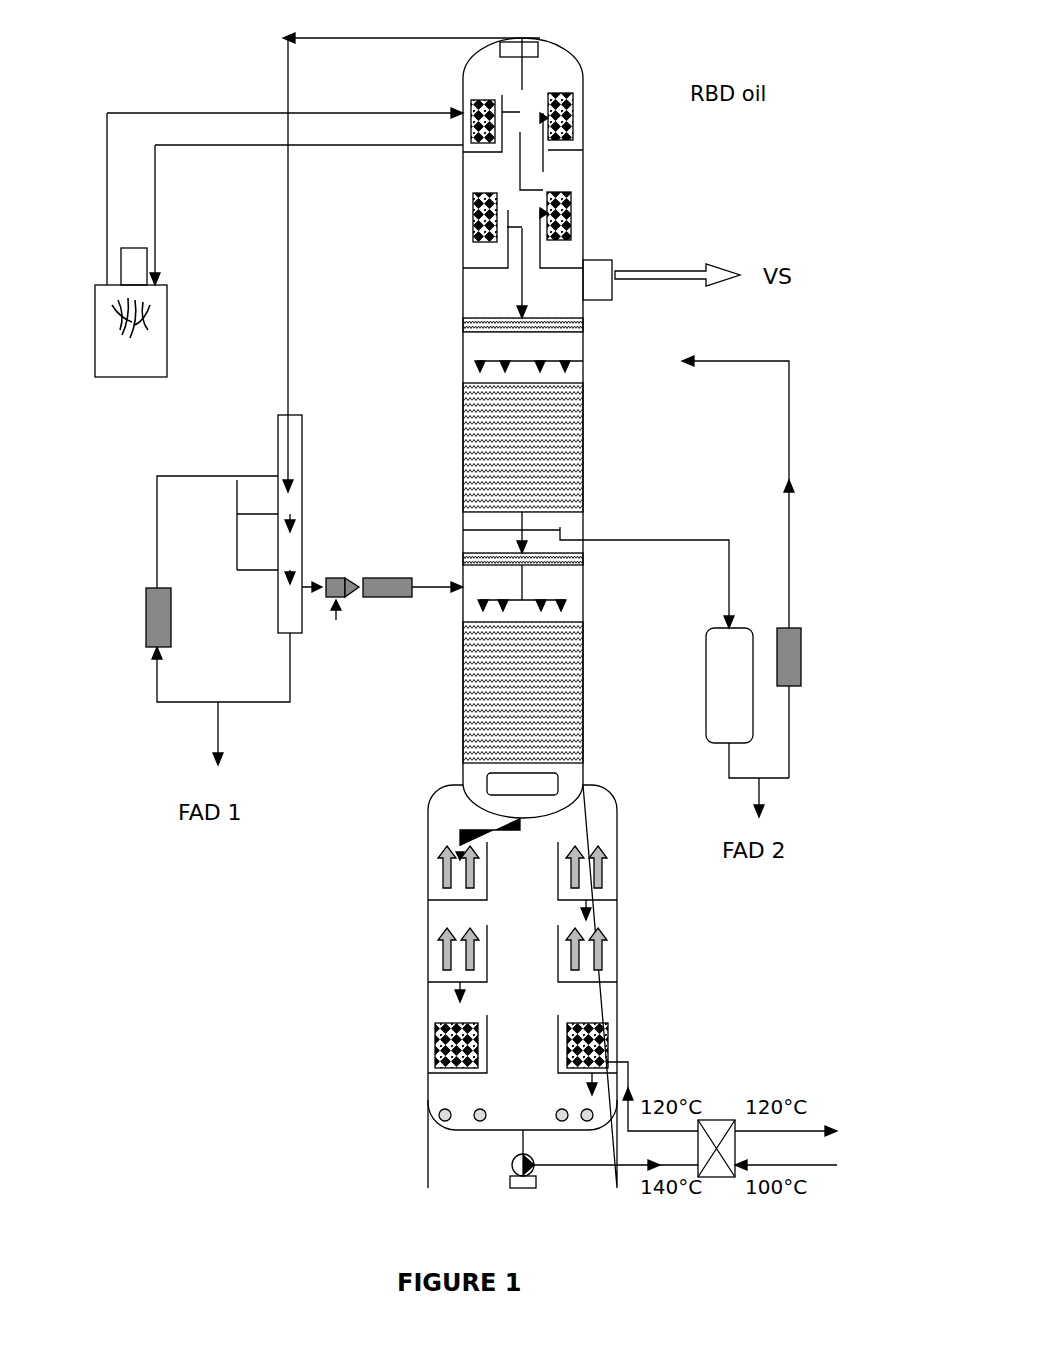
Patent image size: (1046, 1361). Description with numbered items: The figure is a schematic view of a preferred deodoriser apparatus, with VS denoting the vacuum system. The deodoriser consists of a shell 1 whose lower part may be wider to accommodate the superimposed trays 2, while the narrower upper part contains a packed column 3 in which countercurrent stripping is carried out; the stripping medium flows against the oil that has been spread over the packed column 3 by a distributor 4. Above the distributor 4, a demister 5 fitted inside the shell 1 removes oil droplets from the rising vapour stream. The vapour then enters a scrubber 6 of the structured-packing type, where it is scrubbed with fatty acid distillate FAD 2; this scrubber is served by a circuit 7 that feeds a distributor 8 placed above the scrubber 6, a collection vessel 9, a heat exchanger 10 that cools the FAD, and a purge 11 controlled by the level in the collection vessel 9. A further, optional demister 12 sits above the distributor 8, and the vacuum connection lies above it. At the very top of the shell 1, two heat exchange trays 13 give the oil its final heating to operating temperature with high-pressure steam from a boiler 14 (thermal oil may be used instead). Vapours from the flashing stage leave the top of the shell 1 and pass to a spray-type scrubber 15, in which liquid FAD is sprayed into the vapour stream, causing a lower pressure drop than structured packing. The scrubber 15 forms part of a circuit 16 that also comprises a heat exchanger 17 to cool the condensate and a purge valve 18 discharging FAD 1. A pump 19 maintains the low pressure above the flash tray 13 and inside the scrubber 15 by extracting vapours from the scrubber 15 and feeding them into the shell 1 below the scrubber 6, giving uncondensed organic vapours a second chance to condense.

The shell 1 is at (428, 1020).
The superimposed trays 2 is at (600, 960).
The packed column 3 is at (553, 716).
The distributor 4 is at (553, 588).
The demister 5 is at (495, 545).
The scrubber 6 is at (555, 480).
The circuit 7 is at (795, 460).
The distributor 8 is at (563, 353).
The collection vessel 9 is at (720, 680).
The heat exchanger 10 is at (788, 663).
The purge 11 is at (770, 800).
The demister 12 is at (500, 318).
The heat exchange trays 13 is at (563, 128).
The boiler 14 is at (130, 338).
The scrubber 15 is at (293, 455).
The circuit 16 is at (157, 558).
The heat exchanger 17 is at (146, 631).
The purge valve 18 is at (220, 730).
The pump 19 is at (386, 600).